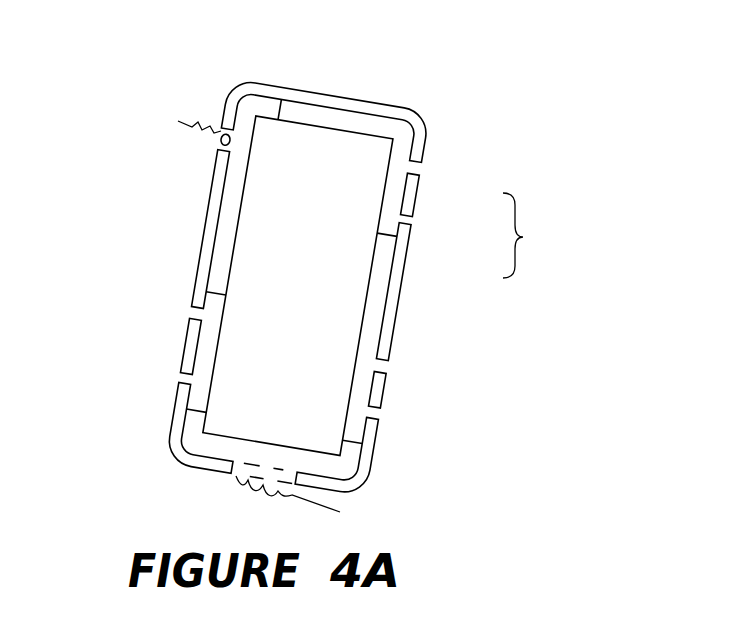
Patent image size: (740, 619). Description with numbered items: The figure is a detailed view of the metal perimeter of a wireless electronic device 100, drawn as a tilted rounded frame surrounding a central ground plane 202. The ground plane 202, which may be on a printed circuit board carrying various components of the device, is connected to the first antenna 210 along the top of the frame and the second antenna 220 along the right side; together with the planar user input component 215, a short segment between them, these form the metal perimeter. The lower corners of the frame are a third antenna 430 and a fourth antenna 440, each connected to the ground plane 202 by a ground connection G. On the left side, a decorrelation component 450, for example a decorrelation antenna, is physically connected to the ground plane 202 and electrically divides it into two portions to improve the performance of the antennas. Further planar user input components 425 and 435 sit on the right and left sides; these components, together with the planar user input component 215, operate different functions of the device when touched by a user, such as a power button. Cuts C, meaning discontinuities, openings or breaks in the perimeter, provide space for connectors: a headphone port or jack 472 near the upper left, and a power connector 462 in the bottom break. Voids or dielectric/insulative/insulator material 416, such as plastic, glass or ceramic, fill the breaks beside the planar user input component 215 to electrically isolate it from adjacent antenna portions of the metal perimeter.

The wireless electronic device 100 is at (172, 222).
The ground plane 202 is at (302, 296).
The first antenna 210 is at (347, 96).
The planar user input component 215 is at (414, 195).
The second antenna 220 is at (401, 268).
The dielectric/insulative/insulator material 416 is at (418, 170).
The planar user input component 425 is at (381, 390).
The third antenna 430 is at (366, 474).
The planar user input component 435 is at (186, 357).
The fourth antenna 440 is at (172, 433).
The decorrelation component 450 is at (195, 302).
The headphone port/jack 472 is at (217, 134).
The power connector 462 is at (262, 467).
The ground connection G is at (282, 96).
The cut C is at (525, 240).